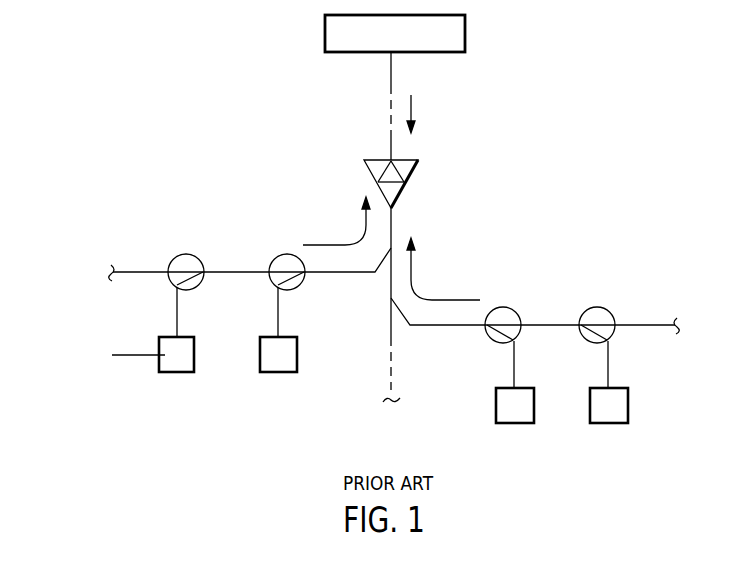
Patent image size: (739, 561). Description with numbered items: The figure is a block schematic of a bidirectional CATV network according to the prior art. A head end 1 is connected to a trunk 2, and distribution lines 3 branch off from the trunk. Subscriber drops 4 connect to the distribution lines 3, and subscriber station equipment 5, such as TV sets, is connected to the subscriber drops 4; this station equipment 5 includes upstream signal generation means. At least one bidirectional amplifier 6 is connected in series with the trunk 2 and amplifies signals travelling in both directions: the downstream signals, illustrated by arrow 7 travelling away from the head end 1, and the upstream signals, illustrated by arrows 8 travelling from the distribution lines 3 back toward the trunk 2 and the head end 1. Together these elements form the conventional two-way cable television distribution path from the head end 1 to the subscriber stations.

The head end 1 is at (466, 30).
The trunk 2 is at (390, 68).
The distribution lines 3 is at (362, 275).
The subscriber drops 4 is at (176, 313).
The subscriber station equipment 5 is at (178, 374).
The bidirectional amplifier 6 is at (420, 173).
The arrow indicating downstream signals 7 is at (413, 104).
The arrows indicating upstream signals 8 is at (358, 238).